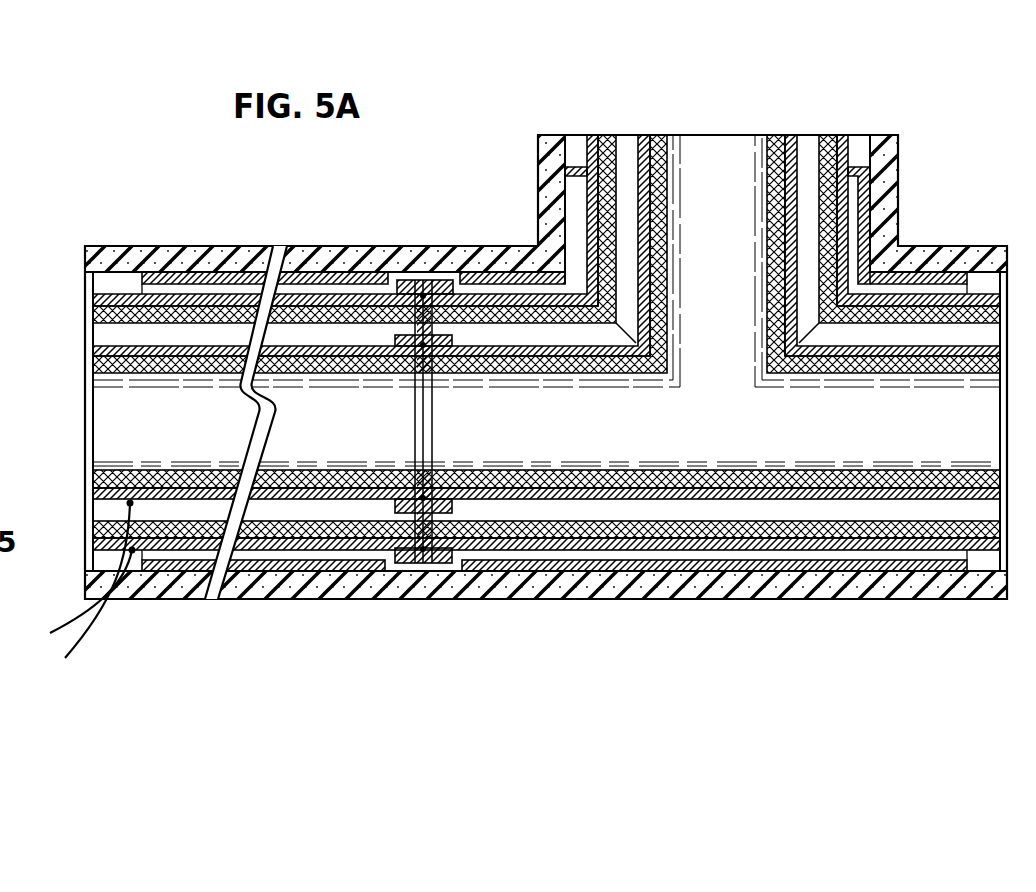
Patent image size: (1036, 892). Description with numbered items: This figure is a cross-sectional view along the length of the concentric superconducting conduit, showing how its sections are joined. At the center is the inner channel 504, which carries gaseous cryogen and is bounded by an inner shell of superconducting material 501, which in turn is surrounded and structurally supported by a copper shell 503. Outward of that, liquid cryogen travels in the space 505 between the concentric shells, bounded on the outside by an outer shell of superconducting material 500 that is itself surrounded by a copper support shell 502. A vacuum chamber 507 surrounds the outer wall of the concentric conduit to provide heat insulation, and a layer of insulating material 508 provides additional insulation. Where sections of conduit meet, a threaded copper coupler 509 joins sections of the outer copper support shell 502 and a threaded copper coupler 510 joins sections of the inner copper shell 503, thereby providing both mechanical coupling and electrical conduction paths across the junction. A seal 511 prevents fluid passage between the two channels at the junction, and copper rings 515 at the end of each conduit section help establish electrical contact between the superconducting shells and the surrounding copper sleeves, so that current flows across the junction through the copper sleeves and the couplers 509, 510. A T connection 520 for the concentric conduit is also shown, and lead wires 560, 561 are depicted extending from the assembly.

The outer shell of superconducting material 500 is at (97, 330).
The inner shell of superconducting material 501 is at (736, 172).
The copper support shell 502 is at (110, 249).
The copper shell 503 is at (640, 160).
The inner channel 504 is at (740, 170).
The space 505 is at (627, 208).
The vacuum chamber 507 is at (338, 282).
The layer of insulating material 508 is at (220, 243).
The threaded copper coupler 509 is at (447, 585).
The threaded copper coupler 510 is at (446, 370).
The seal 511 is at (405, 366).
The copper rings 515 is at (826, 137).
The T connection 520 is at (535, 145).
The lead wire 560 is at (100, 628).
The lead wire 561 is at (77, 617).